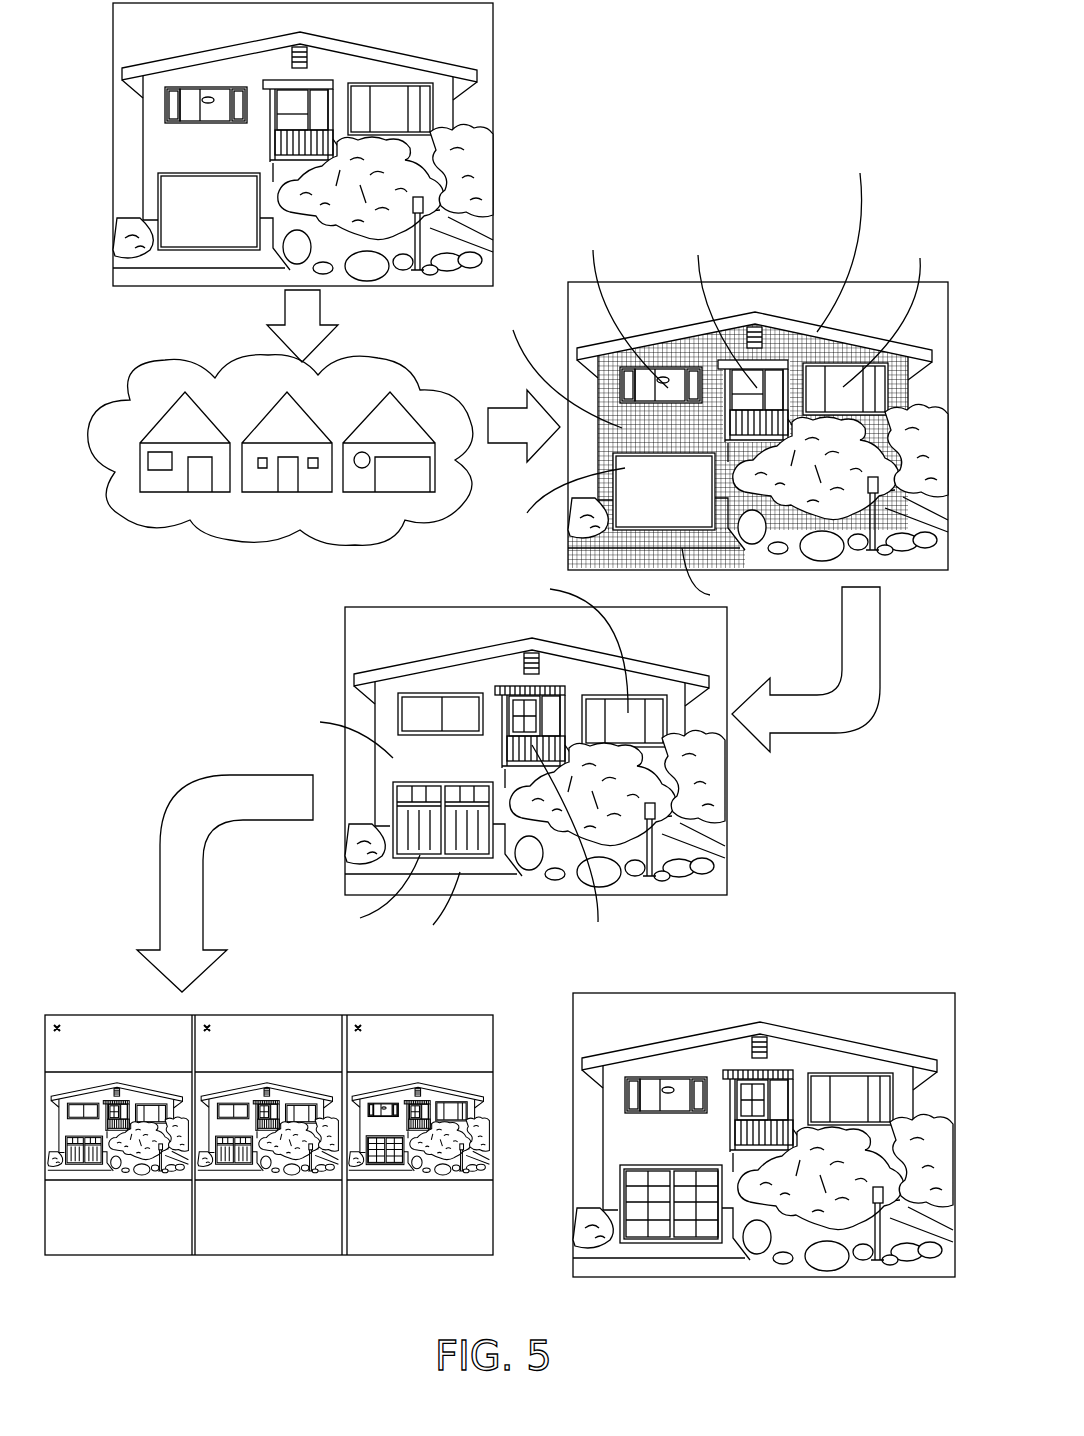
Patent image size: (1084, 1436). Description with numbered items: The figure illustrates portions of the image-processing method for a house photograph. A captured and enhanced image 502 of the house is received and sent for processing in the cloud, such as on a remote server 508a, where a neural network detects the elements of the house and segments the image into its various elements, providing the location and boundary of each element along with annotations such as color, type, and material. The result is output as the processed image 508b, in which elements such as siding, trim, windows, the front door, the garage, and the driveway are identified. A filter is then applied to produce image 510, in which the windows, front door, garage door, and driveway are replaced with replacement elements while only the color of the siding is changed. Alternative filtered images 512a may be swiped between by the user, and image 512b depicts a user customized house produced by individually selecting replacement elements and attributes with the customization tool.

The image 502 is at (493, 90).
The remote server 508a is at (142, 500).
The processed image 508b is at (782, 280).
The image with filter applied 510 is at (345, 665).
The candidate image selection interface 512a is at (222, 1255).
The user customized house image 512b is at (843, 992).